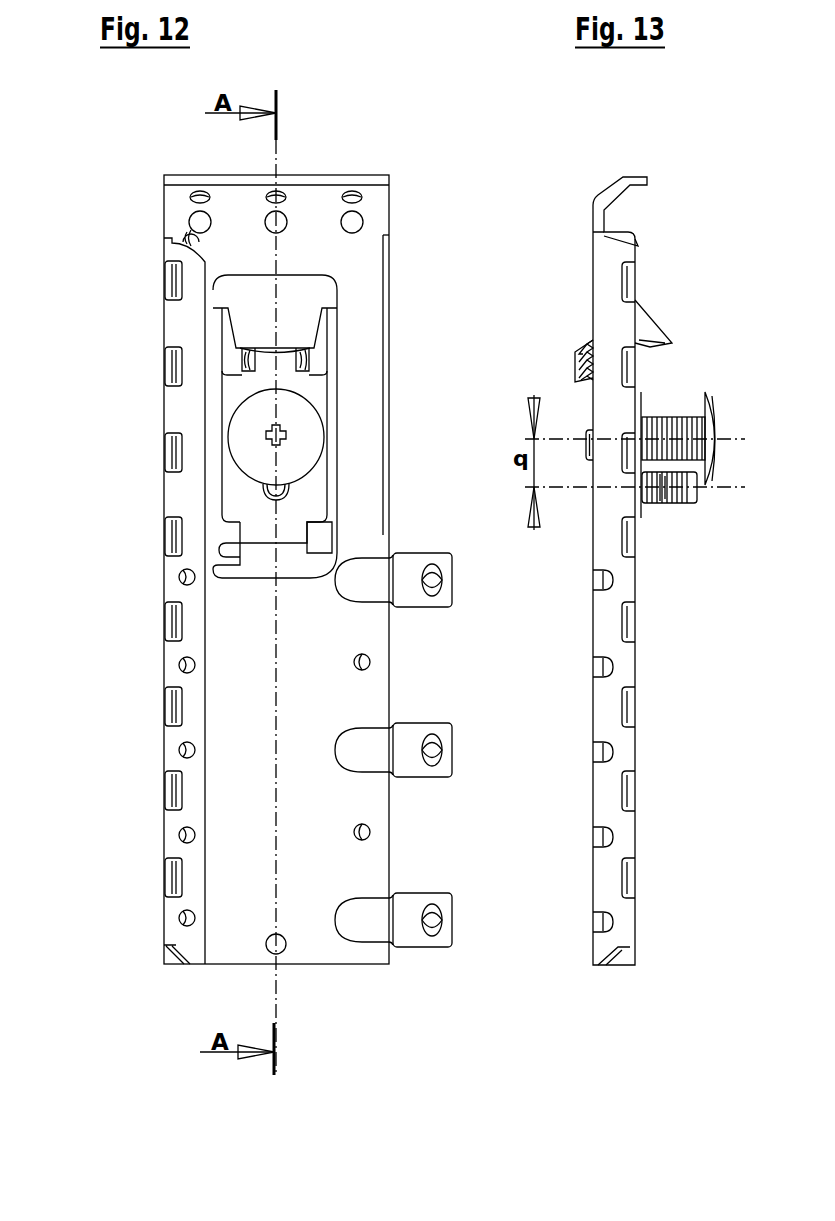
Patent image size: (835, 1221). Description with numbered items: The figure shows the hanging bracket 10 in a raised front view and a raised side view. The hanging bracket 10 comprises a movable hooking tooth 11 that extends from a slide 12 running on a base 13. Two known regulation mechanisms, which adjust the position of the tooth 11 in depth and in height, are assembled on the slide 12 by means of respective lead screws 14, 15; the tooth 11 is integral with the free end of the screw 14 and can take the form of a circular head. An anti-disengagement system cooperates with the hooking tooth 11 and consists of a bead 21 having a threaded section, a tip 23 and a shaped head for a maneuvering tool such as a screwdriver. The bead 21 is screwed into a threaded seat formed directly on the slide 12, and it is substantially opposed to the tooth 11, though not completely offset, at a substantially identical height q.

In FIG. 12, the hanging bracket 10 is at (135, 985).
In FIG. 13, the hanging bracket 10 is at (668, 985).
In FIG. 12, the hooking tooth 11 is at (245, 428).
In FIG. 13, the hooking tooth 11 is at (712, 410).
In FIG. 12, the slide 12 is at (233, 385).
In FIG. 12, the base 13 is at (225, 815).
In FIG. 13, the base 13 is at (607, 808).
In FIG. 13, the lead screw 14 is at (588, 423).
In FIG. 13, the lead screw 15 is at (580, 355).
In FIG. 12, the bead 21 is at (262, 488).
In FIG. 13, the bead 21 is at (667, 508).
In FIG. 13, the tip 23 is at (698, 490).